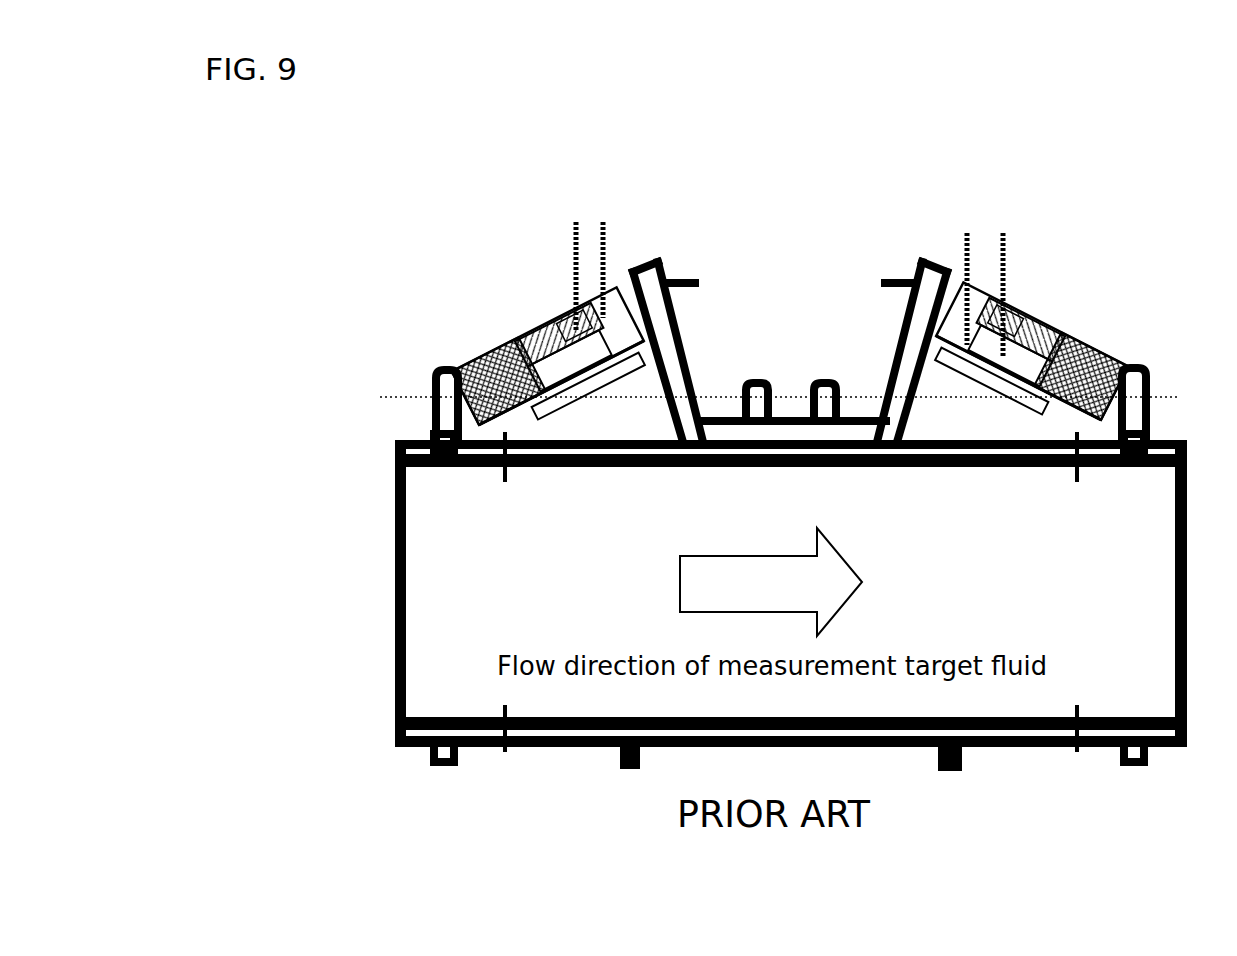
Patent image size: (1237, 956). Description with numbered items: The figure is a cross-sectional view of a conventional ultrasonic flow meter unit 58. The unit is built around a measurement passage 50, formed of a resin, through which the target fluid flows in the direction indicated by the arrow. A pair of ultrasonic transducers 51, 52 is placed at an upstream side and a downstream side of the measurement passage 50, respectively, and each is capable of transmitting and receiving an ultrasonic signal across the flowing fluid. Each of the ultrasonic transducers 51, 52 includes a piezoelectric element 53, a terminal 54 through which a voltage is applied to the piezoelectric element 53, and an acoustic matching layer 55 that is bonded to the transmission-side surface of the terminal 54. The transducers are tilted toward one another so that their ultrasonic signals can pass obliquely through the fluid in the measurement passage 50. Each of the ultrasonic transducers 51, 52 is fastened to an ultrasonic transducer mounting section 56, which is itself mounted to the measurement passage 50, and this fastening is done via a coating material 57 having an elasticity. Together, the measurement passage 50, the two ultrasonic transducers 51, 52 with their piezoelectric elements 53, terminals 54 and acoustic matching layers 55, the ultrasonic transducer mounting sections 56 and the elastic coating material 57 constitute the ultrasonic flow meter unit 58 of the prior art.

The measurement passage 50 is at (1027, 743).
The ultrasonic transducer 51 is at (512, 307).
The ultrasonic transducer 52 is at (1058, 301).
The piezoelectric element 53 is at (547, 377).
The terminal 54 is at (478, 357).
The acoustic matching layer 55 is at (571, 310).
The ultrasonic transducer mounting section 56 is at (885, 340).
The coating material 57 is at (466, 352).
The ultrasonic flow meter unit 58 is at (338, 176).